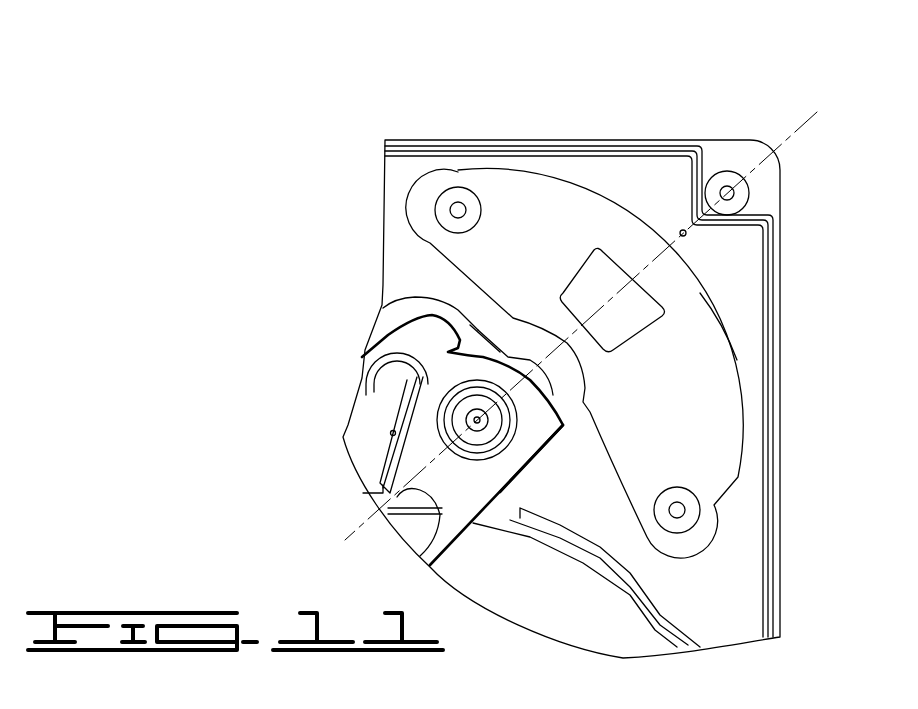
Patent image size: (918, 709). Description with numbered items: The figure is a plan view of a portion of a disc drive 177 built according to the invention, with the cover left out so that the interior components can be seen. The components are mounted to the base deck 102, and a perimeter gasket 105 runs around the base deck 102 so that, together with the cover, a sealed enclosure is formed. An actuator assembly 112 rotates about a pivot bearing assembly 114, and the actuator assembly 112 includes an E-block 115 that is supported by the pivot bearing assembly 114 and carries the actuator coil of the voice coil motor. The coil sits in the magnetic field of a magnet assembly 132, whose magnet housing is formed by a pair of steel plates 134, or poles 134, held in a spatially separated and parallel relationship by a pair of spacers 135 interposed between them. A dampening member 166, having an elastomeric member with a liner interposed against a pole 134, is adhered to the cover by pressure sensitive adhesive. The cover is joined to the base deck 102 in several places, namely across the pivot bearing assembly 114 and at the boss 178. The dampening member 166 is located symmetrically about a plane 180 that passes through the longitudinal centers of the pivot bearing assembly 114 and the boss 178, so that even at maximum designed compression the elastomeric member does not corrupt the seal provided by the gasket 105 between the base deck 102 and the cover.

The disc drive 177 is at (490, 118).
The perimeter gasket 105 is at (701, 140).
The boss 178 is at (748, 183).
The plane 180 is at (686, 236).
The steel plates 134 is at (730, 392).
The magnet assembly 132 is at (722, 470).
The base deck 102 is at (735, 590).
The spacers 135 is at (438, 205).
The dampening member 166 is at (585, 262).
The actuator assembly 112 is at (453, 503).
The pivot bearing assembly 114 is at (498, 445).
The E-block 115 is at (546, 454).